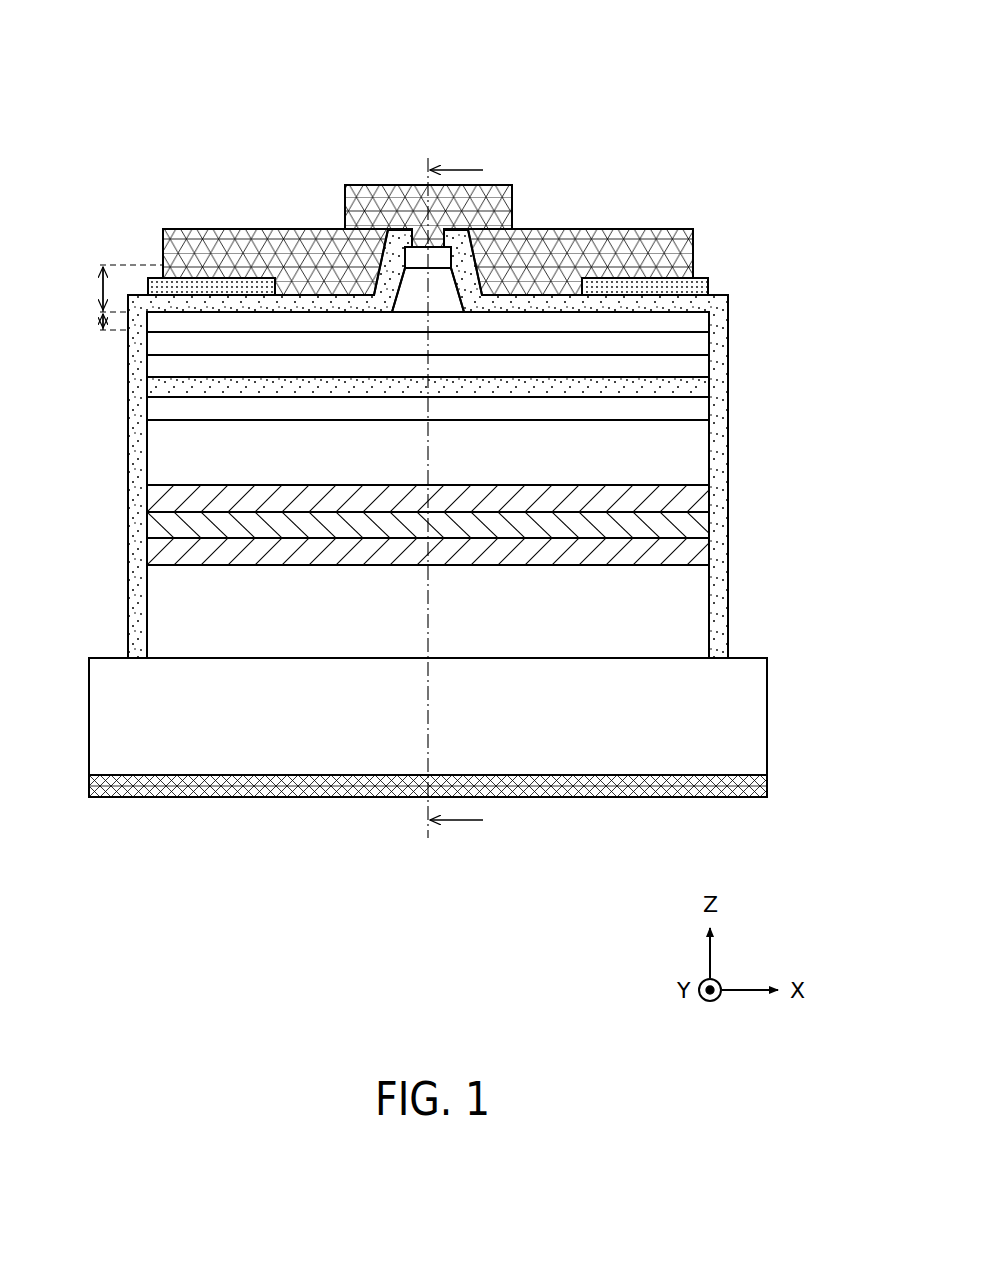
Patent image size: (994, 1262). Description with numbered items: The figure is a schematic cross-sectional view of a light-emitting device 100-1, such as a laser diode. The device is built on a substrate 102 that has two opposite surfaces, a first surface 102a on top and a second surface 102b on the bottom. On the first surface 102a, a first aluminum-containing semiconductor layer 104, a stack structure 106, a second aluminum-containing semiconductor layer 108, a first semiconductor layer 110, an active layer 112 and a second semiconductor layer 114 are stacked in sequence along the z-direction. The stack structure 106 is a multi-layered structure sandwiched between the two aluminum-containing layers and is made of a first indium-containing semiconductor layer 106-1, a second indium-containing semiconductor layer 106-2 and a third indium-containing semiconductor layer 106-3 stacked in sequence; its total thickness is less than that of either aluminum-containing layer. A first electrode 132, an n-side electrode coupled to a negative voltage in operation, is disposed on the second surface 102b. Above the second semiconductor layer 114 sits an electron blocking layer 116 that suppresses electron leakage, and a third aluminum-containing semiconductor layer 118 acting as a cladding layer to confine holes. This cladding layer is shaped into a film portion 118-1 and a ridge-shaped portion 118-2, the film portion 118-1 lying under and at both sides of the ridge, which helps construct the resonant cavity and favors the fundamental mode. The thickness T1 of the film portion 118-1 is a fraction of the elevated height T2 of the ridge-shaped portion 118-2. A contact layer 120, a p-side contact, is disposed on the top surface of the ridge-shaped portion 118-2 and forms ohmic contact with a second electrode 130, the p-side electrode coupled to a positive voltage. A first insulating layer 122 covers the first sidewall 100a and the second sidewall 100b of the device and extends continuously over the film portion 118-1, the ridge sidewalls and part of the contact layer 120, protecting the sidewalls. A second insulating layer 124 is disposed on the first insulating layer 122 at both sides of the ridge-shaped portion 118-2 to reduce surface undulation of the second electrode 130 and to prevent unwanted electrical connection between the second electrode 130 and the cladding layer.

The light-emitting device 100-1 is at (192, 38).
The substrate 102 is at (756, 720).
The first surface 102a is at (107, 652).
The second surface 102b is at (158, 782).
The first aluminum-containing semiconductor layer 104 is at (700, 614).
The stack structure 106 is at (503, 519).
The first indium-containing semiconductor layer 106-1 is at (700, 552).
The second indium-containing semiconductor layer 106-2 is at (700, 524).
The third indium-containing semiconductor layer 106-3 is at (700, 497).
The second aluminum-containing semiconductor layer 108 is at (700, 460).
The first semiconductor layer 110 is at (700, 412).
The active layer 112 is at (700, 389).
The second semiconductor layer 114 is at (700, 367).
The electron blocking layer 116 is at (700, 343).
The third aluminum-containing semiconductor layer 118 is at (428, 241).
The film portion 118-1 is at (575, 326).
The ridge-shaped portion 118-2 is at (441, 297).
The contact layer 120 is at (371, 207).
The first insulating layer 122 is at (713, 305).
The second insulating layer 124 is at (712, 286).
The second electrode 130 is at (695, 256).
The first electrode 132 is at (766, 783).
The first sidewall 100a is at (716, 436).
The second sidewall 100b is at (145, 466).
The thickness of the film portion T1 is at (96, 322).
The elevated height of the ridge-shaped portion T2 is at (113, 288).